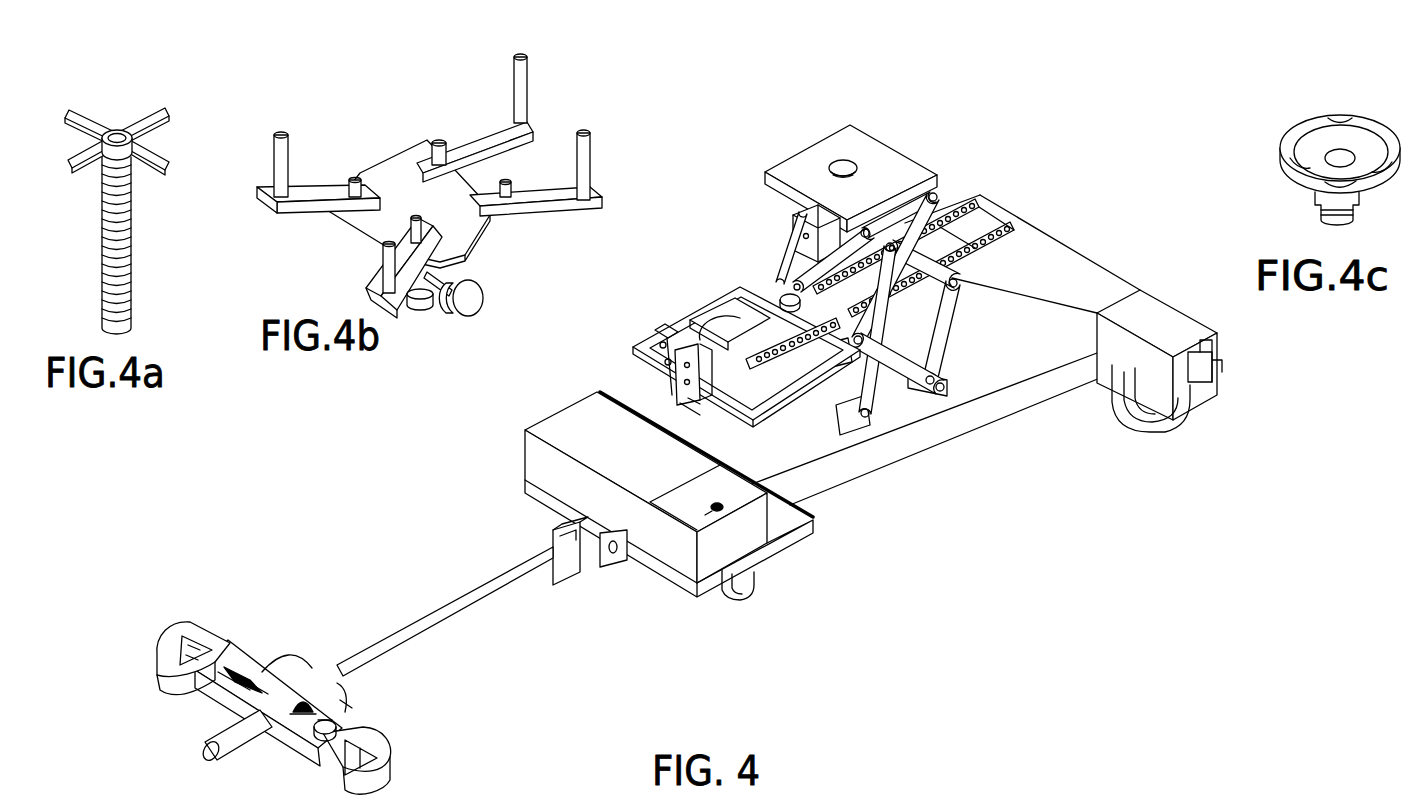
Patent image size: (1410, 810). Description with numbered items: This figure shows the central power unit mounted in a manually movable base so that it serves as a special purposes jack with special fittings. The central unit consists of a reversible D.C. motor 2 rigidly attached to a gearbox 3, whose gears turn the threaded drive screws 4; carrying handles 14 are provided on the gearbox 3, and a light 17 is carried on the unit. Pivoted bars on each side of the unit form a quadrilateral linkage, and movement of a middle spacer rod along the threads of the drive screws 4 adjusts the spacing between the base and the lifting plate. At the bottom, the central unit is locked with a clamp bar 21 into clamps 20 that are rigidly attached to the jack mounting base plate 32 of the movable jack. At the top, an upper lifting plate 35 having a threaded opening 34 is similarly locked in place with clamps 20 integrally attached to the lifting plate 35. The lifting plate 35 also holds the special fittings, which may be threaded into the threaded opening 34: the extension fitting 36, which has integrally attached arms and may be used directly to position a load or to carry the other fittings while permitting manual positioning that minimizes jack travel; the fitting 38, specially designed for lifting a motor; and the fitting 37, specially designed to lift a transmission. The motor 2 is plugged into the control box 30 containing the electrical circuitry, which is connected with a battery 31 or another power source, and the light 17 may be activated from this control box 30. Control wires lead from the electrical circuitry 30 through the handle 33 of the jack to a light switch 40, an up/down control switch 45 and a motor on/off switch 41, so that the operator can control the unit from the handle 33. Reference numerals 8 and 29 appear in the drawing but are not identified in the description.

In FIG. 4, the reversible D.C. motor 2 is at (726, 329).
In FIG. 4, the gearbox 3 is at (807, 300).
In FIG. 4, the drive screws 4 is at (1008, 228).
In FIG. 4, the drive gear 8 is at (800, 287).
In FIG. 4, the carrying handles 14 is at (680, 403).
In FIG. 4, the light 17 is at (673, 327).
In FIG. 4, the clamps 20 is at (800, 210).
In FIG. 4, the clamp bar 21 is at (810, 417).
In FIG. 4, the support post 29 is at (677, 368).
In FIG. 4, the control box 30 is at (678, 494).
In FIG. 4, the battery 31 is at (707, 512).
In FIG. 4, the jack mounting base plate 32 is at (953, 407).
In FIG. 4, the handle 33 is at (455, 605).
In FIG. 4, the threaded opening 34 is at (858, 167).
In FIG. 4, the upper lifting plate 35 is at (883, 145).
In FIG. 4a, the extension fitting 36 is at (102, 216).
In FIG. 4b, the transmission lifting fitting 37 is at (383, 268).
In FIG. 4c, the motor lifting fitting 38 is at (1297, 128).
In FIG. 4, the light switch 40 is at (300, 697).
In FIG. 4, the motor on/off switch 41 is at (343, 723).
In FIG. 4, the up/down control switch 45 is at (215, 672).